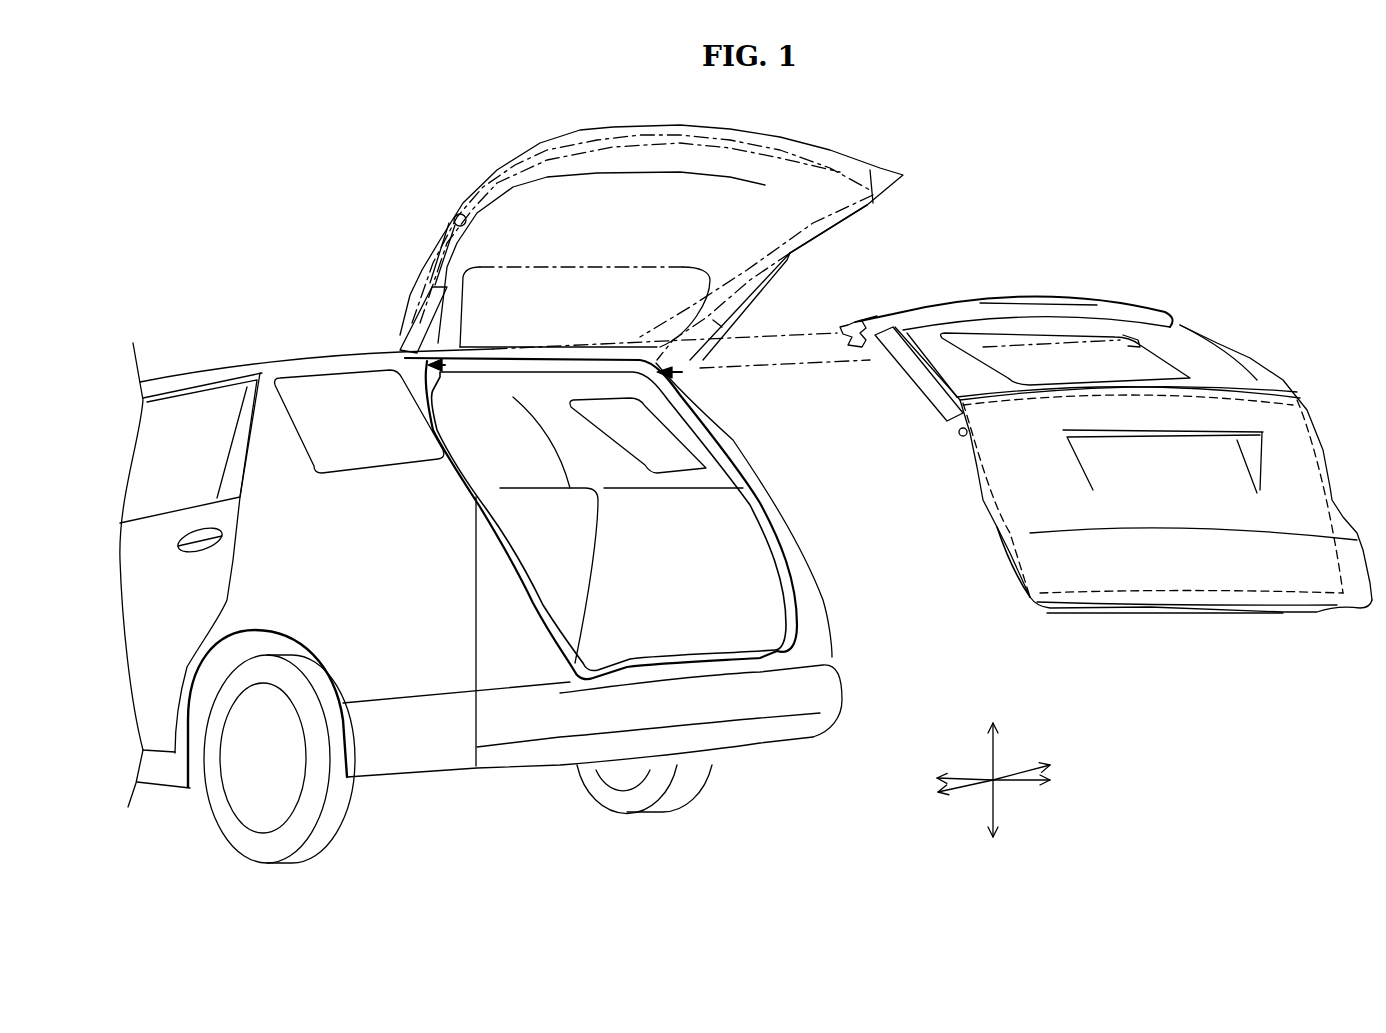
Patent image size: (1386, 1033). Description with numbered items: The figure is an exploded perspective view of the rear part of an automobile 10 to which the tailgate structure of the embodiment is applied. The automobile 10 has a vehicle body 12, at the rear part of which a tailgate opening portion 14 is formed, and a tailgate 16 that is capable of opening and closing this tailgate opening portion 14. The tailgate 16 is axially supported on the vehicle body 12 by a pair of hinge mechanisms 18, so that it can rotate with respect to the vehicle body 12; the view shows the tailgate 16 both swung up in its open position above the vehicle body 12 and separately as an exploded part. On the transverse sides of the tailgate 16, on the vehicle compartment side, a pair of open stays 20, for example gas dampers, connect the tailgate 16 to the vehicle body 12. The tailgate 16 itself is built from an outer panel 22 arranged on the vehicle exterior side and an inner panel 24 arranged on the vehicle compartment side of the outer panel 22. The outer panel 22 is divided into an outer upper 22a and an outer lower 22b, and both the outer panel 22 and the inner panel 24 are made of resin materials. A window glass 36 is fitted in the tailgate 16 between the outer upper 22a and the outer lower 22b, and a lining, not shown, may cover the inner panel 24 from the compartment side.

The automobile 10 is at (200, 352).
The vehicle body 12 is at (313, 350).
The tailgate opening portion 14 is at (534, 560).
The tailgate 16 is at (788, 131).
The hinge mechanism 18 is at (847, 323).
The open stay 20 is at (420, 305).
The outer panel 22 is at (1317, 247).
The outer upper 22a is at (1140, 313).
The outer lower 22b is at (1190, 413).
The inner panel 24 is at (767, 224).
The window glass 36 is at (1015, 330).